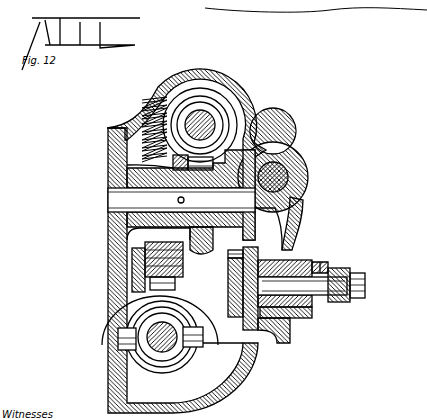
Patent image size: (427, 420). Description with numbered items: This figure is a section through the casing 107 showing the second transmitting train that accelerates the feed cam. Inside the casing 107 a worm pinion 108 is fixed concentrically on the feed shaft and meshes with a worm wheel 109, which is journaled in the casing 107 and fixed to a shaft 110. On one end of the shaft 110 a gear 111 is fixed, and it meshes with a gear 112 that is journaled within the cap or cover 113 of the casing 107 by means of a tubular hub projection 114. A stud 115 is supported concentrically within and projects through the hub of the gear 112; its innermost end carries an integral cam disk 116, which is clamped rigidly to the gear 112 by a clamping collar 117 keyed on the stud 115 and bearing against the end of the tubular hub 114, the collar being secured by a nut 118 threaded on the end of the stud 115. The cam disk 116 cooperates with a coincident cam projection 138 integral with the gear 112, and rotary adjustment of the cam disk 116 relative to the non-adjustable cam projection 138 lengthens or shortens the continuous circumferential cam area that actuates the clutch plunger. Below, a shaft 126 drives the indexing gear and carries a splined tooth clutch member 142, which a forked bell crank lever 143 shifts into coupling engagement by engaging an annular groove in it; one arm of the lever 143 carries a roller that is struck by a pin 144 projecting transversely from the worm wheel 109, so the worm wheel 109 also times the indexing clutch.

The casing 107 is at (236, 92).
The worm pinion 108 is at (222, 122).
The worm wheel 109 is at (206, 252).
The shaft 110 is at (113, 200).
The gear 111 is at (263, 140).
The gear 112 is at (283, 241).
The cap or cover 113 is at (258, 250).
The tubular hub projection 114 is at (290, 272).
The stud 115 is at (332, 268).
The cam disk 116 is at (238, 288).
The clamping collar 117 is at (345, 270).
The nut 118 is at (362, 282).
The shaft 126 is at (176, 353).
The cam projection 138 is at (238, 254).
The tooth clutch member 142 is at (162, 362).
The forked bell crank lever 143 is at (150, 271).
The pin 144 is at (173, 165).